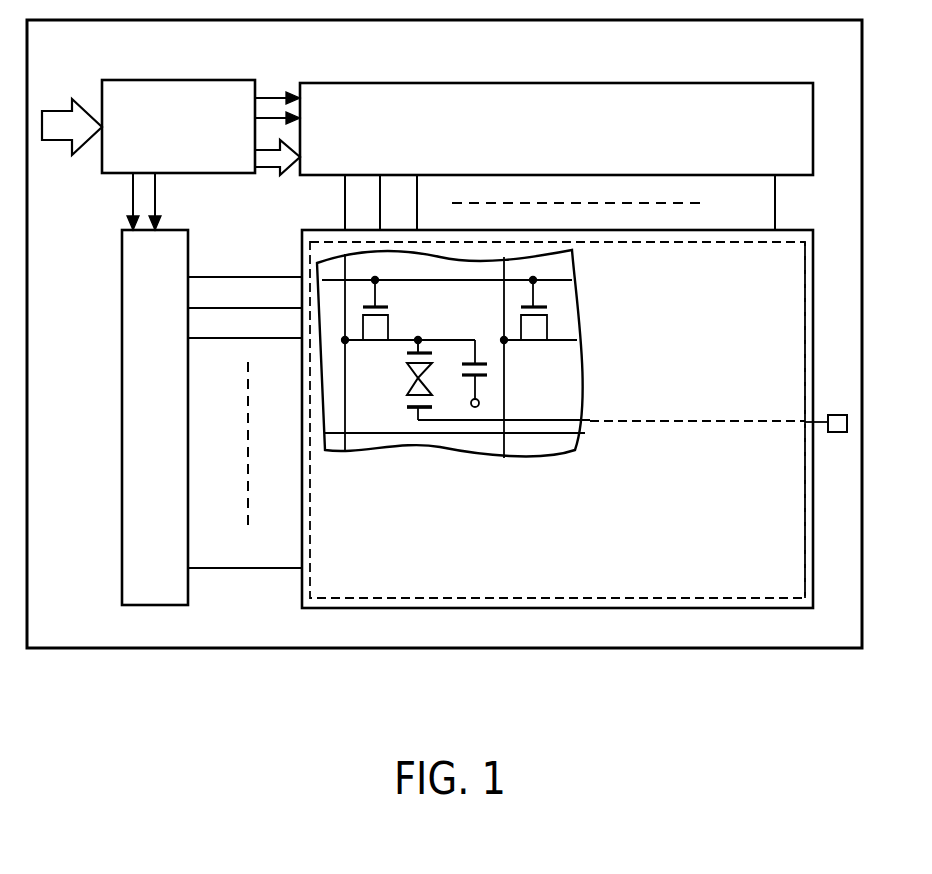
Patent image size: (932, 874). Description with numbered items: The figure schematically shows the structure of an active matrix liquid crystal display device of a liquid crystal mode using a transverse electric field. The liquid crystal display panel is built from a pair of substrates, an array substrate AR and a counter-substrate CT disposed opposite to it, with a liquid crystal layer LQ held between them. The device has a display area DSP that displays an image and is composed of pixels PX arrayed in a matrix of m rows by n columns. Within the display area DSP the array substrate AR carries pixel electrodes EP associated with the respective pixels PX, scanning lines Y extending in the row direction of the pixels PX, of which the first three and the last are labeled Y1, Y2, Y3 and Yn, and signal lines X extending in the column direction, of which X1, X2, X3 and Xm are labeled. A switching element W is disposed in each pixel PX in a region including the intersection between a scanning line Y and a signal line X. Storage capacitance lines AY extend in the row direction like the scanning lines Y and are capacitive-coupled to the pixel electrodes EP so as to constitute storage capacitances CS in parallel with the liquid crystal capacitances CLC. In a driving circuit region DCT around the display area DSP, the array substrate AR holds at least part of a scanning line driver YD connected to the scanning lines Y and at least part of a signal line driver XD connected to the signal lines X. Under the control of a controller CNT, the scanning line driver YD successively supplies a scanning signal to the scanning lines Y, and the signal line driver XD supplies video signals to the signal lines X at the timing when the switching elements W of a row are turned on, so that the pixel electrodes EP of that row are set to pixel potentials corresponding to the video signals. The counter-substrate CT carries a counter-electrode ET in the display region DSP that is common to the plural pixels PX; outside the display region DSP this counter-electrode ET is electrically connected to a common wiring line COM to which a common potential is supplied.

The array substrate AR is at (822, 632).
The counter-substrate CT is at (808, 375).
The display area DSP is at (613, 600).
The driving circuit region DCT is at (269, 622).
The controller CNT is at (176, 105).
The signal line driver XD is at (766, 108).
The scanning line driver YD is at (122, 430).
The signal line X1 is at (328, 202).
The signal line X2 is at (363, 202).
The signal line X3 is at (400, 202).
The signal line Xm is at (613, 202).
The scanning line Y1 is at (245, 264).
The scanning line Y2 is at (245, 295).
The scanning line Y3 is at (245, 325).
The scanning line Yn is at (245, 465).
The signal line X is at (347, 405).
The scanning line Y is at (553, 283).
The pixel PX is at (383, 420).
The switching element W is at (393, 311).
The liquid crystal capacitance CLC is at (393, 380).
The liquid crystal layer LQ is at (430, 395).
The pixel electrode EP is at (437, 357).
The counter-electrode ET is at (420, 412).
The storage capacitance CS is at (497, 368).
The storage capacitance line AY is at (479, 403).
The common wiring line COM is at (827, 433).